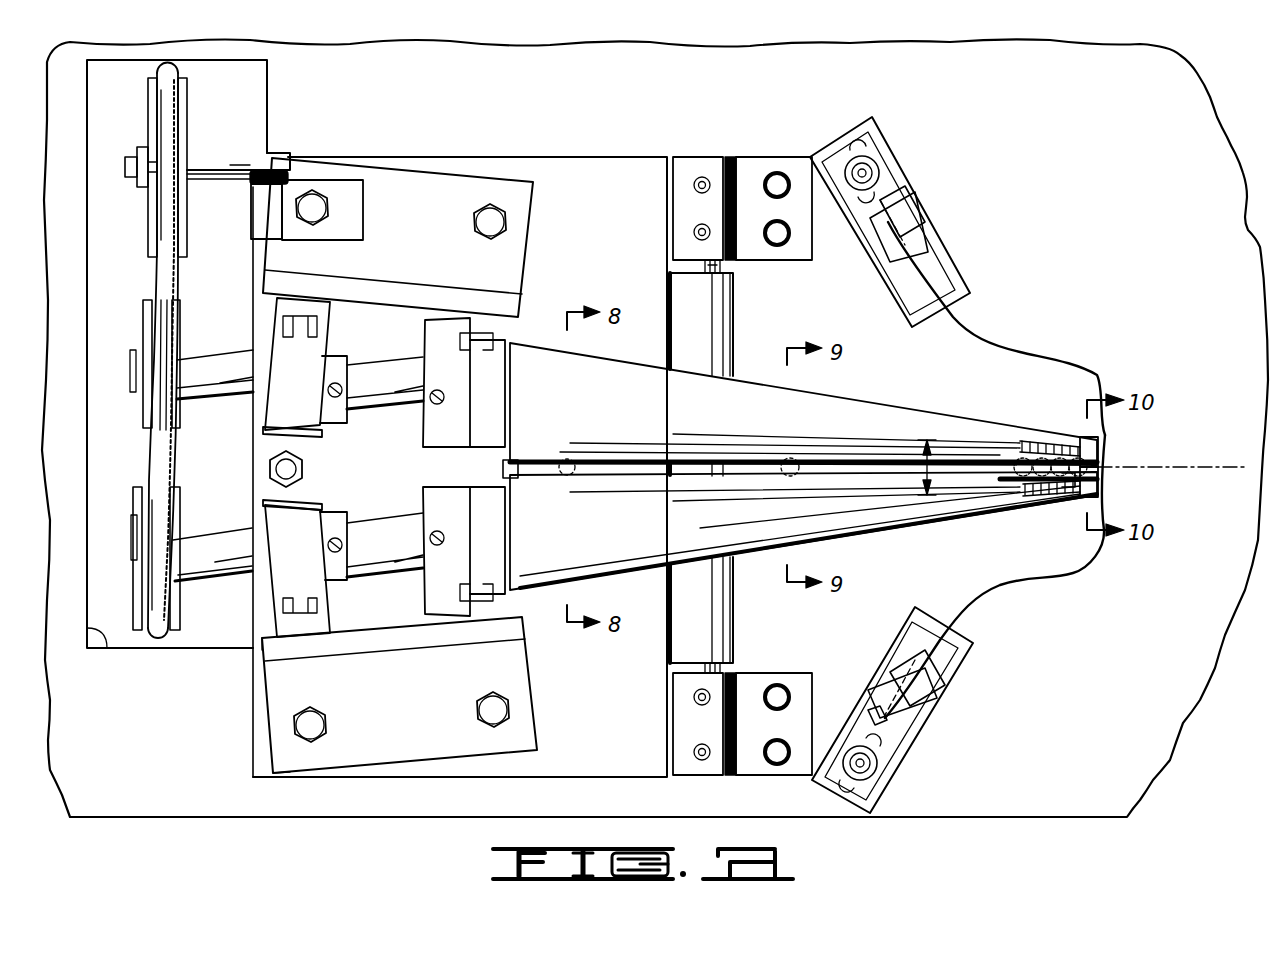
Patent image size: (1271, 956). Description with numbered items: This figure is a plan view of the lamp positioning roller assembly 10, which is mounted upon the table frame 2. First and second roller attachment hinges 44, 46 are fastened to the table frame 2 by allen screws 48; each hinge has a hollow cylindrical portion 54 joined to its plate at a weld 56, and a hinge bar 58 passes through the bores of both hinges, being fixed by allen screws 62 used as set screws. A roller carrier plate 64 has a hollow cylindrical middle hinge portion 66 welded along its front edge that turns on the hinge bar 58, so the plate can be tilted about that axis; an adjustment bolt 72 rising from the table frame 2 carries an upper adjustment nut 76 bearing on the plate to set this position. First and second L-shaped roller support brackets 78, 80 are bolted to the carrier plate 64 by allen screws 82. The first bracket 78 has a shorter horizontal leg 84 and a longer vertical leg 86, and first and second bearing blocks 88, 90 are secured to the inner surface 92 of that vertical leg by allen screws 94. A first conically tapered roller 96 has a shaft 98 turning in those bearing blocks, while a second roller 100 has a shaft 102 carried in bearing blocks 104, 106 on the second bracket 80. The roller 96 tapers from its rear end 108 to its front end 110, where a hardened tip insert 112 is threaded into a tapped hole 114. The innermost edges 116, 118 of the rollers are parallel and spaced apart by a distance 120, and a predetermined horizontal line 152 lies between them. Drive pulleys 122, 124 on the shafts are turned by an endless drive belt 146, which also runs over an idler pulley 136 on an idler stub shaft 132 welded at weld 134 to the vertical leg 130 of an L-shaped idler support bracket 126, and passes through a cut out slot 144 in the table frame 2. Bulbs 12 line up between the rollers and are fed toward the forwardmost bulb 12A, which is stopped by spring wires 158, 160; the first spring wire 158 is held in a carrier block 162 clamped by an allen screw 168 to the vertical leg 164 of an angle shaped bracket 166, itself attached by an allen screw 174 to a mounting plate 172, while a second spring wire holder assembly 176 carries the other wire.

The table frame 2 is at (1212, 668).
The lamp positioning roller assembly 10 is at (588, 130).
The bulbs 12 is at (565, 478).
The forwardmost bulb 12A is at (1110, 470).
The first roller attachment hinge 44 is at (797, 678).
The second roller attachment hinge 46 is at (805, 243).
The allen screws 48 is at (777, 230).
The hollow cylindrical portion 54 is at (680, 688).
The weld 56 is at (738, 776).
The hinge bar 58 is at (722, 266).
The allen screws 62 is at (700, 750).
The roller carrier plate 64 is at (595, 739).
The middle hinge portion 66 is at (705, 327).
The adjustment bolt 72 is at (296, 470).
The upper adjustment nut 76 is at (300, 462).
The first L-shaped roller support bracket 78 is at (399, 695).
The second L-shaped roller support bracket 80 is at (398, 237).
The allen screws 82 is at (322, 210).
The shorter horizontal leg 84 is at (292, 760).
The longer vertical leg 86 is at (275, 655).
The first bearing block 88 is at (314, 592).
The second bearing block 90 is at (458, 582).
The inner surface 92 is at (352, 640).
The allen screws 94 is at (297, 598).
The first conically tapered roller 96 is at (803, 531).
The shaft 98 is at (208, 540).
The second roller 100 is at (803, 404).
The shaft 102 is at (208, 362).
The bearing block 104 is at (320, 344).
The bearing block 106 is at (452, 346).
The rear end 108 is at (500, 478).
The front end 110 is at (1077, 490).
The tip insert 112 is at (1100, 478).
The threaded and tapped hole 114 is at (1035, 500).
The innermost edge 116 is at (814, 470).
The innermost edge 118 is at (828, 458).
The distance 120 is at (925, 446).
The first roller drive pulley 122 is at (135, 487).
The second roller drive pulley 124 is at (133, 397).
The L-shaped idler support bracket 126 is at (340, 184).
The vertical leg 130 is at (262, 214).
The idler stub shaft 132 is at (277, 156).
The weld 134 is at (250, 186).
The idler pulley 136 is at (148, 100).
The cut out slot 144 is at (104, 648).
The drive belt 146 is at (158, 270).
The predetermined horizontal line 152 is at (1223, 466).
The first spring wire 158 is at (1020, 576).
The second spring wire 160 is at (1018, 353).
The carrier block 162 is at (922, 692).
The vertical leg 164 is at (916, 714).
The angle shaped bracket 166 is at (900, 742).
The allen screw 168 is at (877, 718).
The mounting plate 172 is at (880, 802).
The allen screw 174 is at (872, 764).
The second spring wire holder assembly 176 is at (924, 190).